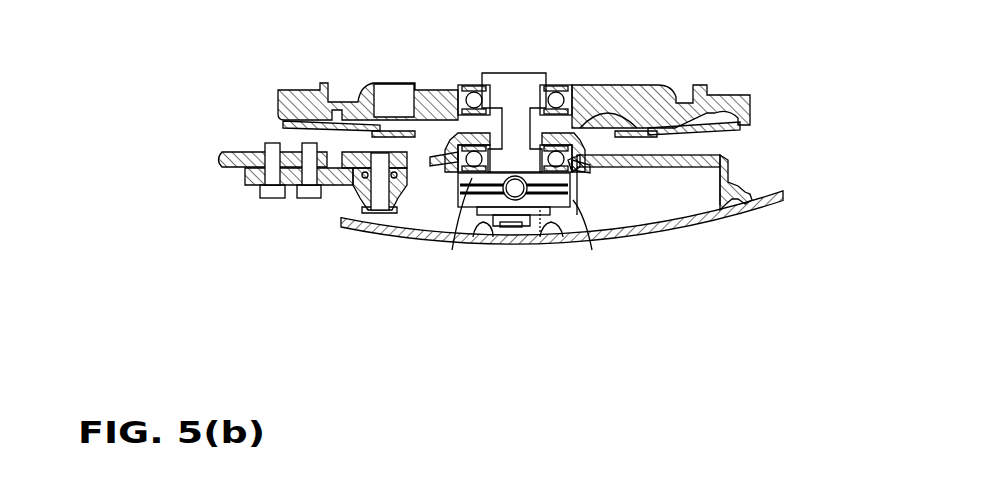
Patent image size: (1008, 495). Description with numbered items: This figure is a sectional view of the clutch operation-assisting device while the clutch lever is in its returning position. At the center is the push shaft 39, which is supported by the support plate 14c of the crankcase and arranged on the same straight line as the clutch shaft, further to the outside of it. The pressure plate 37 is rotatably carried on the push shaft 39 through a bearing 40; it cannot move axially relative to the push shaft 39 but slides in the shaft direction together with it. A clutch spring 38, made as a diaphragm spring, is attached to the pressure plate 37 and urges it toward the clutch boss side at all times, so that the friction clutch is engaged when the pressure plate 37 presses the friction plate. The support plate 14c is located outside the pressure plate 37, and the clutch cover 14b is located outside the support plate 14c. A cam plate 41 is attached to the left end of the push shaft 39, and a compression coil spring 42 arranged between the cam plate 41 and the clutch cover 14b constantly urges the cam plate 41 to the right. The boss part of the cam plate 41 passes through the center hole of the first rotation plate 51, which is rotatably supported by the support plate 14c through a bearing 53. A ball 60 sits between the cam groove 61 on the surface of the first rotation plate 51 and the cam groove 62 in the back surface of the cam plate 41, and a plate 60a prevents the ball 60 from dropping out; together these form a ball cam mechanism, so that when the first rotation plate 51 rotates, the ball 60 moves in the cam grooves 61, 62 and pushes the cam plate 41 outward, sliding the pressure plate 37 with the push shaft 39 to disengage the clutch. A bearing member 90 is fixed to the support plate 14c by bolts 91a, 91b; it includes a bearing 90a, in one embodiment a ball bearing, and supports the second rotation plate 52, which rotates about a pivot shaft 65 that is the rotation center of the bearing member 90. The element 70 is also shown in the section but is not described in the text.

The clutch cover 14b is at (352, 224).
The support plate 14c is at (244, 152).
The pressure plate 37 is at (727, 95).
The clutch spring 38 is at (732, 128).
The push shaft 39 is at (534, 76).
The bearing 40 is at (556, 84).
The cam plate 41 is at (577, 207).
The compression coil spring 42 is at (558, 238).
The first rotation plate 51 is at (605, 178).
The second rotation plate 52 is at (433, 100).
The bearing 53 is at (585, 125).
The ball 60 is at (530, 216).
The plate 60a is at (575, 200).
The cam groove 61 is at (510, 178).
The cam groove 62 is at (502, 212).
The pivot shaft 65 is at (377, 214).
The lower housing 70 is at (666, 193).
The bearing member 90 is at (333, 188).
The bearing 90a is at (405, 214).
The bolt 91a is at (302, 200).
The bolt 91b is at (265, 200).